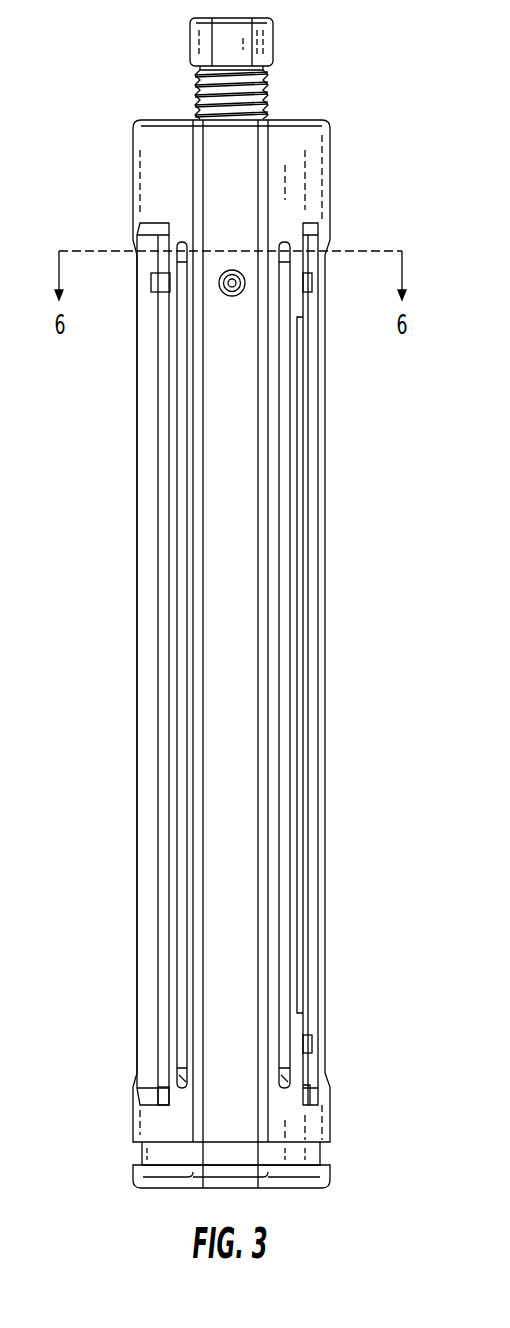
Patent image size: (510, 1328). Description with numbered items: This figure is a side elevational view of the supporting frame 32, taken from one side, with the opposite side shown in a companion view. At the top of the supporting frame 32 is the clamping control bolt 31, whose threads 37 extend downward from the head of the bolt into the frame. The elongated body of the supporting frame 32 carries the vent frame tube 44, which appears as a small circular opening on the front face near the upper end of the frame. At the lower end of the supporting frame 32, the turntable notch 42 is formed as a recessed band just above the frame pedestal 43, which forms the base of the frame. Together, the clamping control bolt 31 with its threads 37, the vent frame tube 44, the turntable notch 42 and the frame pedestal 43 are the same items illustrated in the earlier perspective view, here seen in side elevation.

The clamping control bolt 31 is at (265, 43).
The threads 37 is at (266, 102).
The supporting frame 32 is at (315, 177).
The vent frame tube 44 is at (232, 296).
The turntable notch 42 is at (152, 1155).
The frame pedestal 43 is at (326, 1177).